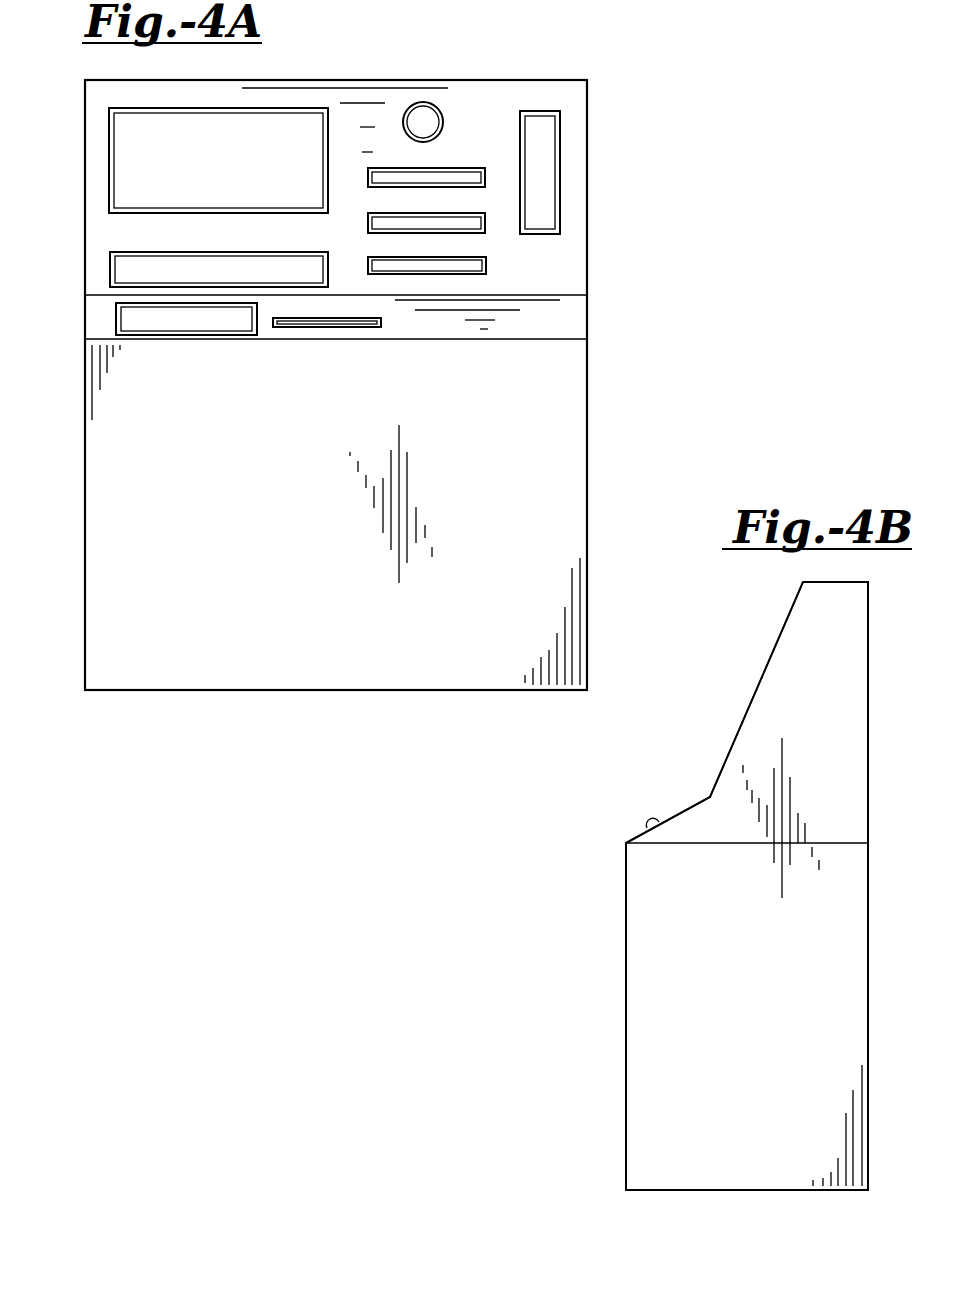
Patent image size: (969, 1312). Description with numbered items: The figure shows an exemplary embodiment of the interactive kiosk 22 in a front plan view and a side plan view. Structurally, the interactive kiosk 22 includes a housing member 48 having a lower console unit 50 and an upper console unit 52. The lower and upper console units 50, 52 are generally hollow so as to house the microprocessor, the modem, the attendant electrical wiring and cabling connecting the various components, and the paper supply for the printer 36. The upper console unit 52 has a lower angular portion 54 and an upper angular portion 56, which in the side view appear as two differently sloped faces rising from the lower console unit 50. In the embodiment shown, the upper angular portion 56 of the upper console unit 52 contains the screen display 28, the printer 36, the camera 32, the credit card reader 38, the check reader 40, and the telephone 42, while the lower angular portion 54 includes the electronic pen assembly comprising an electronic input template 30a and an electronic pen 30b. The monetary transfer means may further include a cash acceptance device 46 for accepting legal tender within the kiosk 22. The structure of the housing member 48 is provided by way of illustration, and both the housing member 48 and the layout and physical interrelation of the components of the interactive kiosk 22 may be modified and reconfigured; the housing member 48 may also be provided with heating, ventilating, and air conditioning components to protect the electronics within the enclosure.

In FIG. 4A, the interactive kiosk 22 is at (170, 716).
In FIG. 4B, the interactive kiosk 22 is at (583, 1120).
In FIG. 4A, the screen display 28 is at (280, 103).
In FIG. 4A, the electronic input template 30a is at (203, 335).
In FIG. 4A, the electronic pen 30b is at (317, 330).
In FIG. 4B, the electronic pen 30b is at (650, 823).
In FIG. 4A, the camera 32 is at (418, 101).
In FIG. 4A, the printer 36 is at (218, 252).
In FIG. 4A, the credit card reader 38 is at (450, 168).
In FIG. 4A, the check reader 40 is at (373, 209).
In FIG. 4A, the telephone 42 is at (542, 110).
In FIG. 4A, the cash acceptance device 46 is at (486, 258).
In FIG. 4A, the housing member 48 is at (72, 228).
In FIG. 4A, the lower console unit 50 is at (597, 476).
In FIG. 4B, the lower console unit 50 is at (620, 1055).
In FIG. 4A, the upper console unit 52 is at (592, 233).
In FIG. 4B, the upper console unit 52 is at (714, 768).
In FIG. 4A, the lower angular portion 54 is at (565, 321).
In FIG. 4B, the lower angular portion 54 is at (680, 817).
In FIG. 4B, the upper angular portion 56 is at (767, 664).